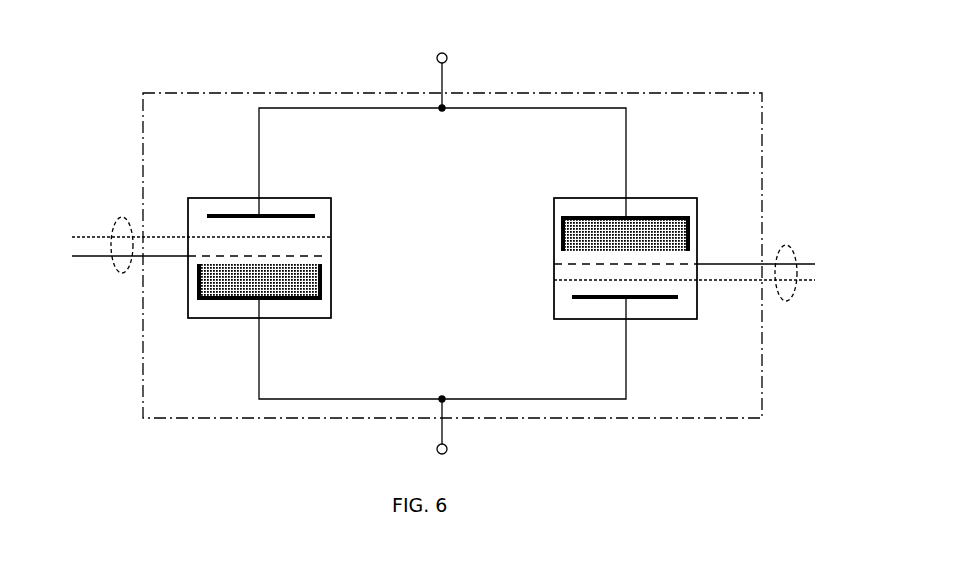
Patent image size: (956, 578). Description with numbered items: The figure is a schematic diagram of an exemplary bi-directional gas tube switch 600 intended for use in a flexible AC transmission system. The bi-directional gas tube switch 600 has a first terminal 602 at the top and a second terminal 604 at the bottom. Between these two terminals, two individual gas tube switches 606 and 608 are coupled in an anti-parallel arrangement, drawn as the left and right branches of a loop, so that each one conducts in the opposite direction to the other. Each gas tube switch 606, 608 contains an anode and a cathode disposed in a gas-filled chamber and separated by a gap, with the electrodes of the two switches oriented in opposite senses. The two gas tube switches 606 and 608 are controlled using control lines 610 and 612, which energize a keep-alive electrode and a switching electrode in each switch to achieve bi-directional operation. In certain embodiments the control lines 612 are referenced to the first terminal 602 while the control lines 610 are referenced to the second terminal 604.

The bi-directional gas tube switch 600 is at (180, 64).
The first terminal 602 is at (448, 58).
The second terminal 604 is at (448, 449).
The gas tube switch 606 is at (213, 321).
The gas tube switch 608 is at (554, 196).
The control lines 610 is at (121, 217).
The control lines 612 is at (786, 245).